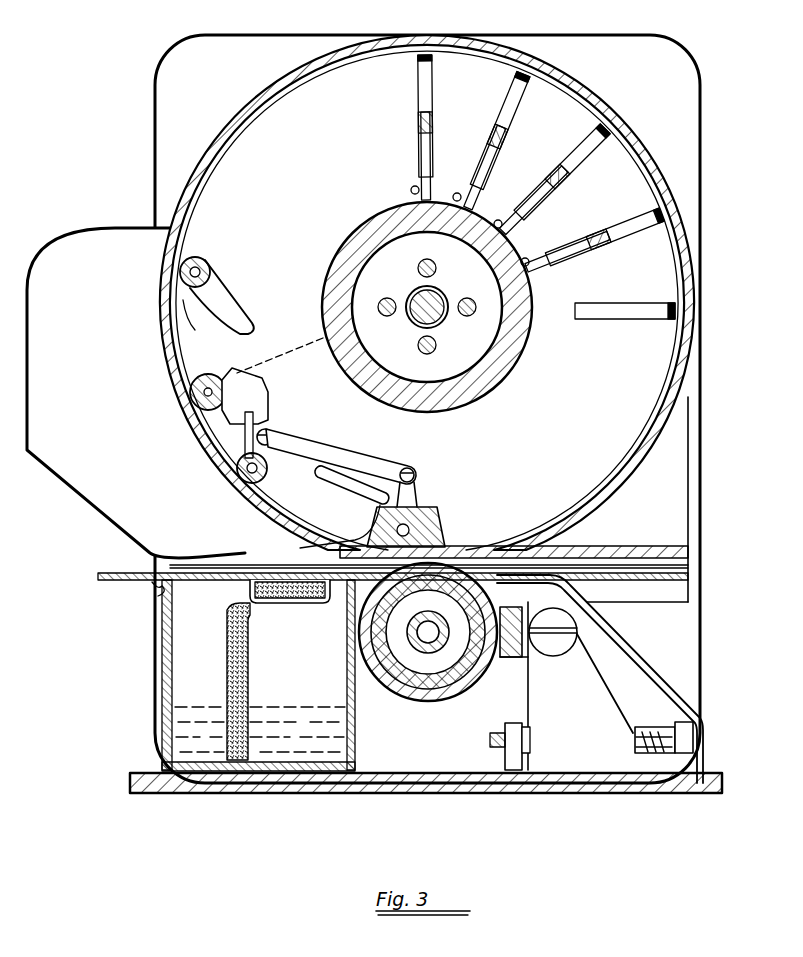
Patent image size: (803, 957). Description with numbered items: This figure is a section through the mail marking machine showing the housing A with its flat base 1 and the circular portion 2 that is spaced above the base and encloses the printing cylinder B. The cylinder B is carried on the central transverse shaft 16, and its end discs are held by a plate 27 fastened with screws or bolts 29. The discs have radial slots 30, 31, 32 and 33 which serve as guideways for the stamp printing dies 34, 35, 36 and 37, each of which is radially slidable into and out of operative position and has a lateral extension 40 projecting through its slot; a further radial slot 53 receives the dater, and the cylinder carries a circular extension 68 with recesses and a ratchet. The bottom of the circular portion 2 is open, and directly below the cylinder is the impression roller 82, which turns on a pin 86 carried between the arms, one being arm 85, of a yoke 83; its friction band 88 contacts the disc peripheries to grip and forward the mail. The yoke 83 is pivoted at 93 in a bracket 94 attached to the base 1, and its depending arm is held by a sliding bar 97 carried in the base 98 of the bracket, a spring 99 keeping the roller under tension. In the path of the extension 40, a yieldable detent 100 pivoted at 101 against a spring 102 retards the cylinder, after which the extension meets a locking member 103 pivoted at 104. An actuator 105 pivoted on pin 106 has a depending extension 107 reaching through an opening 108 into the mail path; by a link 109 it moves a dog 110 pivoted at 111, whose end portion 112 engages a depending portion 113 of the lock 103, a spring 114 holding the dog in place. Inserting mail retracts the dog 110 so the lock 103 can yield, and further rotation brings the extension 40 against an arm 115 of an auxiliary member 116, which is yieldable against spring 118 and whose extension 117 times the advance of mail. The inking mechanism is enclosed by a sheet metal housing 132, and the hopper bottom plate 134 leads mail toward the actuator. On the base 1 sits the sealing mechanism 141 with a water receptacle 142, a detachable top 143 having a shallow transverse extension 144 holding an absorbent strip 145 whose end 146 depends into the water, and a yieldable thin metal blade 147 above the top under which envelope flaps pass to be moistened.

The housing A is at (160, 117).
The printing cylinder B is at (535, 425).
The flat base 1 is at (338, 773).
The circular portion 2 is at (192, 157).
The central transverse shaft 16 is at (447, 311).
The plate 27 is at (452, 360).
The screws or bolts 29 is at (417, 268).
The radial slot 30 is at (413, 189).
The radial slot 31 is at (457, 194).
The radial slot 32 is at (497, 220).
The radial slot 33 is at (530, 252).
The stamp printing die 34 is at (411, 161).
The stamp printing die 35 is at (478, 162).
The stamp printing die 36 is at (531, 194).
The stamp printing die 37 is at (560, 241).
The lateral extension 40 is at (500, 132).
The radial slot 53 is at (615, 315).
The circular extension 68 is at (517, 351).
The impression roller 82 is at (430, 703).
The yoke 83 is at (513, 660).
The arm 85 is at (499, 607).
The pin 86 is at (422, 655).
The friction band 88 is at (460, 690).
The pivot 93 is at (558, 638).
The bracket 94 is at (590, 696).
The sliding bar 97 is at (495, 745).
The base of bracket 98 is at (650, 762).
The spring 99 is at (652, 726).
The yieldable detent 100 is at (225, 293).
The pivot 101 is at (200, 258).
The spring 102 is at (218, 328).
The locking member 103 is at (255, 392).
The pivot 104 is at (208, 374).
The actuator 105 is at (418, 498).
The pivot pin 106 is at (424, 522).
The depending extension 107 is at (356, 591).
The opening 108 is at (552, 556).
The link 109 is at (350, 453).
The dog 110 is at (244, 440).
The pivot 111 is at (247, 485).
The end portion 112 is at (246, 417).
The depending portion 113 is at (273, 423).
The spring 114 is at (236, 470).
The arm 115 is at (352, 478).
The auxiliary member 116 is at (478, 518).
The extension 117 is at (457, 536).
The spring 118 is at (390, 513).
The sheet metal housing 132 is at (136, 393).
The bottom plate 134 is at (122, 582).
The sealing mechanism 141 is at (293, 665).
The receptacle 142 is at (163, 650).
The detachable top 143 is at (202, 581).
The shallow transverse extension 144 is at (292, 606).
The strip of absorbent material 145 is at (226, 622).
The end 146 is at (250, 704).
The yieldable thin metal blade 147 is at (287, 550).